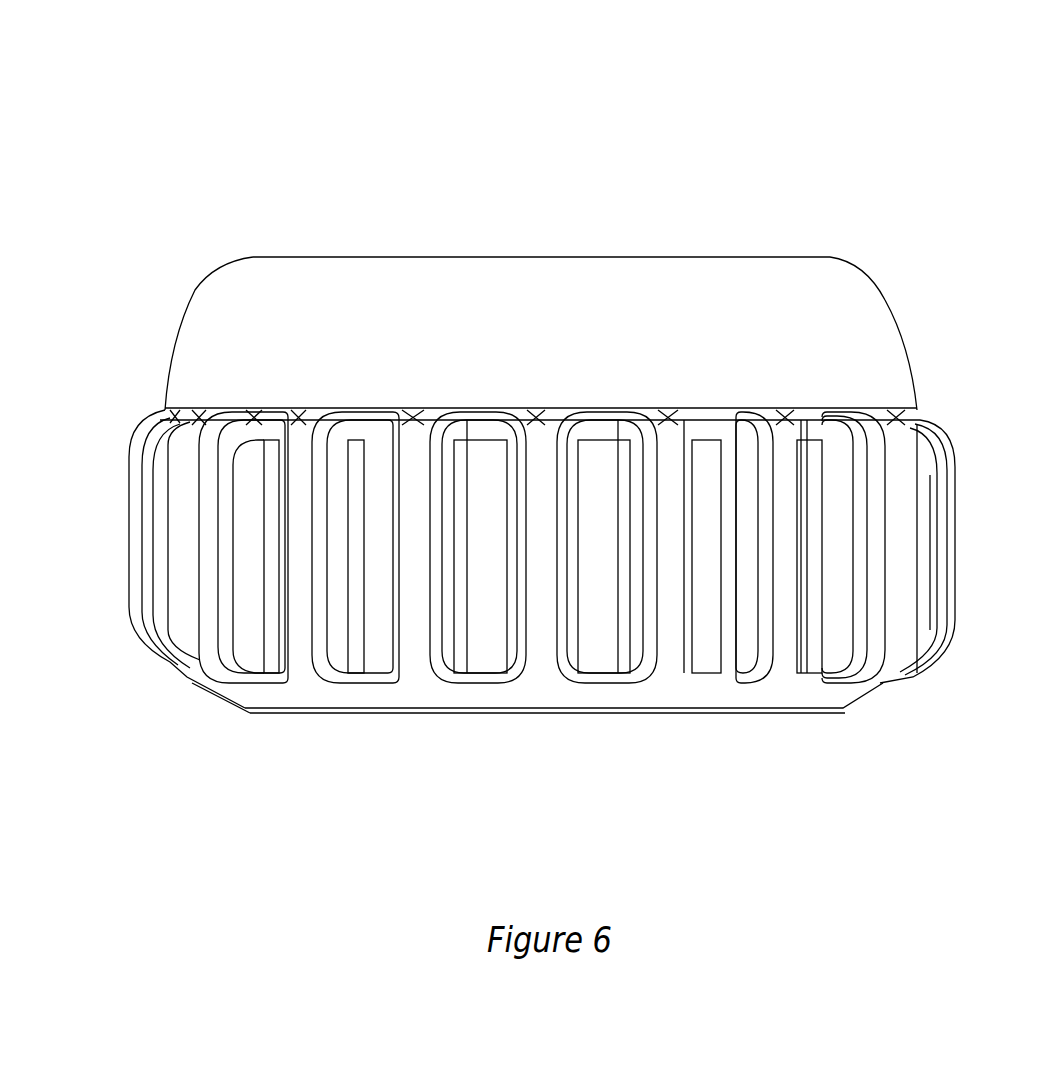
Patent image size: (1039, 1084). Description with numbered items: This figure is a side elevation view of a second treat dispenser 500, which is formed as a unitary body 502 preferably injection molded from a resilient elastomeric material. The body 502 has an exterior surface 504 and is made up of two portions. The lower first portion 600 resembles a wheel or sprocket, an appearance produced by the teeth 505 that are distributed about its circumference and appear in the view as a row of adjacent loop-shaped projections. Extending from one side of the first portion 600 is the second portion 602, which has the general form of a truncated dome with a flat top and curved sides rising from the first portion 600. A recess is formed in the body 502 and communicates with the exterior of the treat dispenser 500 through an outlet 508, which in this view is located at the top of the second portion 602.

The second treat dispenser 500 is at (536, 432).
The unitary body 502 is at (950, 418).
The exterior surface 504 is at (222, 300).
The teeth 505 is at (668, 583).
The outlet 508 is at (740, 257).
The first portion 600 is at (536, 605).
The second portion 602 is at (501, 303).